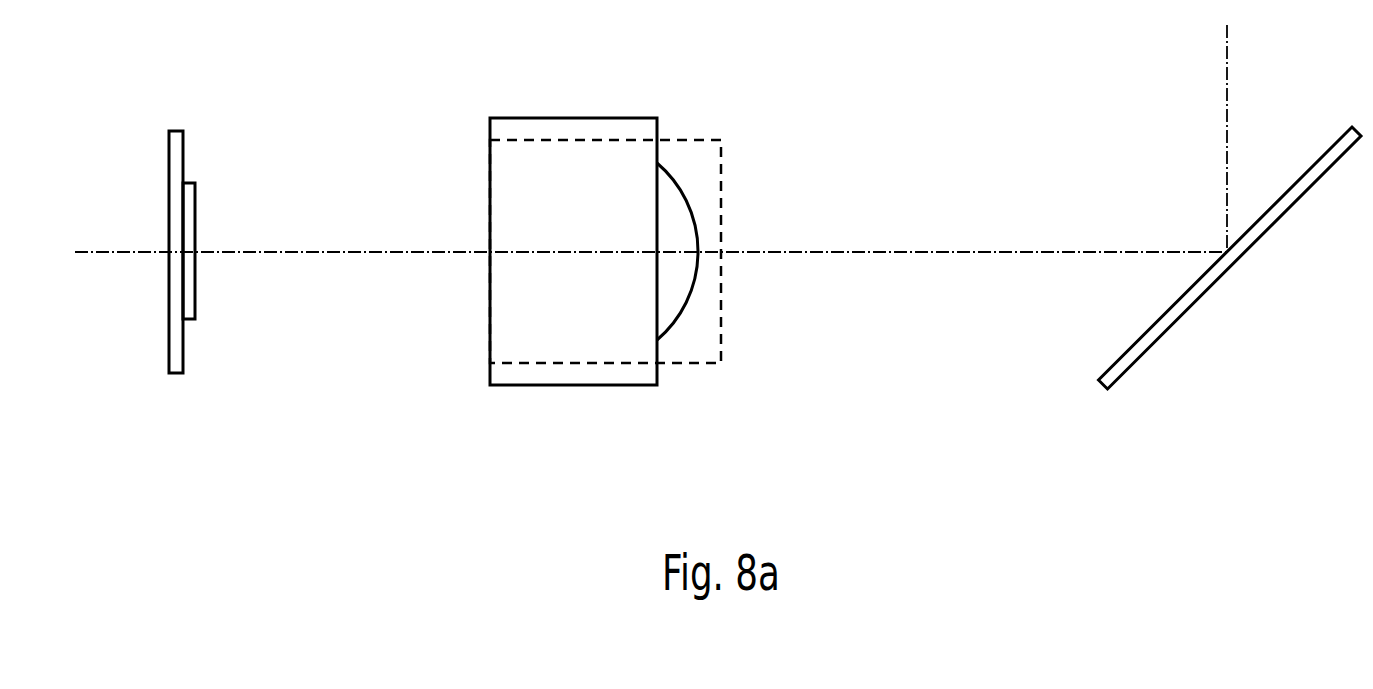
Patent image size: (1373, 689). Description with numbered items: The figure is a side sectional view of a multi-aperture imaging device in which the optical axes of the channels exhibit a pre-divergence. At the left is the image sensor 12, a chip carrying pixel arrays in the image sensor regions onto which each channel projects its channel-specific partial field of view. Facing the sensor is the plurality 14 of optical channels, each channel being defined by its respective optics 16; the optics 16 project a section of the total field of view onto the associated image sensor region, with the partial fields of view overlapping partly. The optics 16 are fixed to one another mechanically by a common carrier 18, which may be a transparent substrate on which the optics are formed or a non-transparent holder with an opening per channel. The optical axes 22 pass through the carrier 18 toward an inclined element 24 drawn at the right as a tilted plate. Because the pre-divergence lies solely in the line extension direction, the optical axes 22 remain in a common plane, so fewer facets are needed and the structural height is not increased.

The image sensor 12 is at (168, 104).
The plurality of optical channels 14 is at (738, 354).
The optics 16 is at (721, 180).
The common carrier 18 is at (573, 385).
The optical axes 22 is at (989, 252).
The mirror 24 is at (1287, 212).